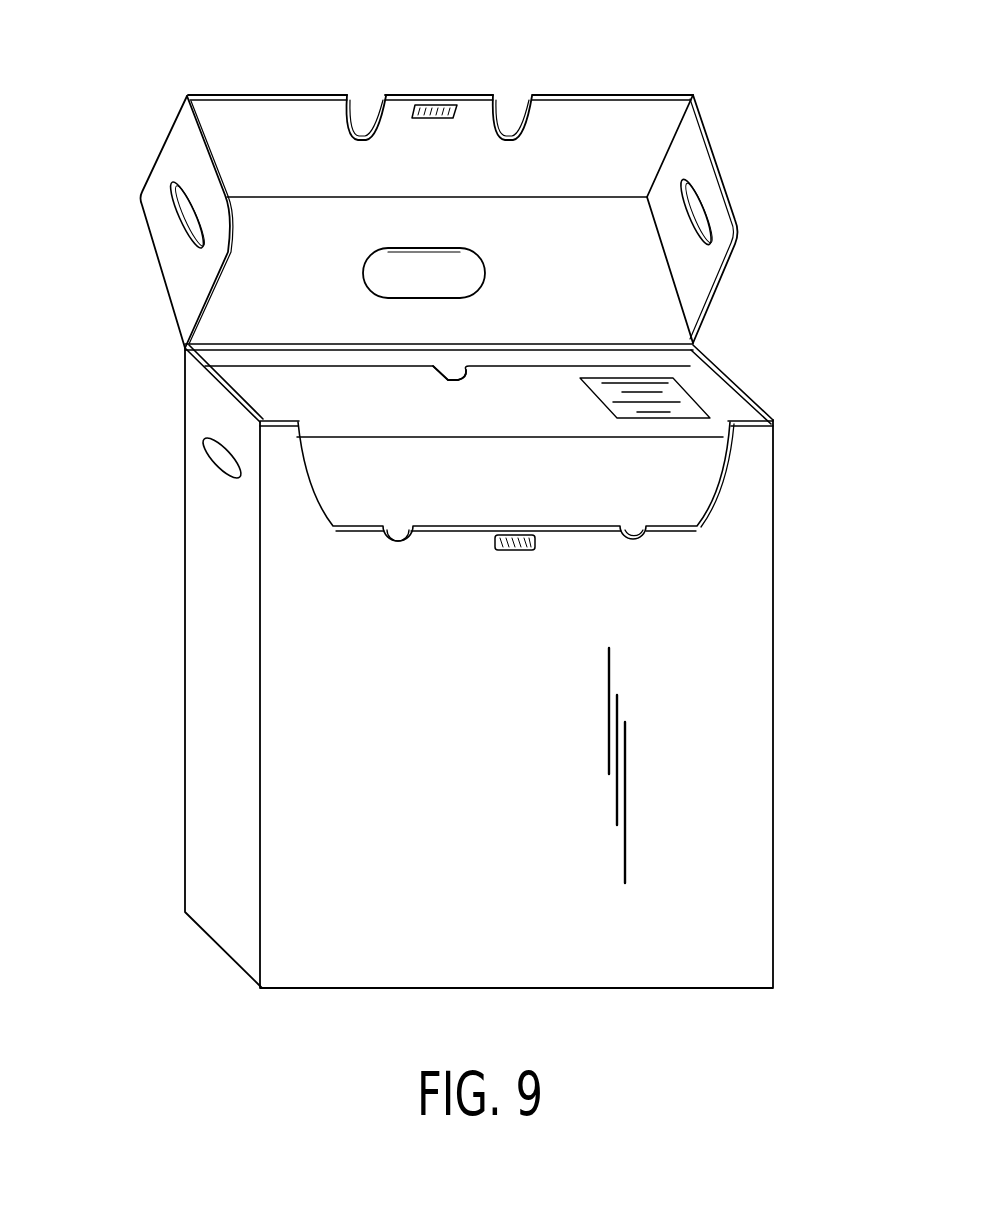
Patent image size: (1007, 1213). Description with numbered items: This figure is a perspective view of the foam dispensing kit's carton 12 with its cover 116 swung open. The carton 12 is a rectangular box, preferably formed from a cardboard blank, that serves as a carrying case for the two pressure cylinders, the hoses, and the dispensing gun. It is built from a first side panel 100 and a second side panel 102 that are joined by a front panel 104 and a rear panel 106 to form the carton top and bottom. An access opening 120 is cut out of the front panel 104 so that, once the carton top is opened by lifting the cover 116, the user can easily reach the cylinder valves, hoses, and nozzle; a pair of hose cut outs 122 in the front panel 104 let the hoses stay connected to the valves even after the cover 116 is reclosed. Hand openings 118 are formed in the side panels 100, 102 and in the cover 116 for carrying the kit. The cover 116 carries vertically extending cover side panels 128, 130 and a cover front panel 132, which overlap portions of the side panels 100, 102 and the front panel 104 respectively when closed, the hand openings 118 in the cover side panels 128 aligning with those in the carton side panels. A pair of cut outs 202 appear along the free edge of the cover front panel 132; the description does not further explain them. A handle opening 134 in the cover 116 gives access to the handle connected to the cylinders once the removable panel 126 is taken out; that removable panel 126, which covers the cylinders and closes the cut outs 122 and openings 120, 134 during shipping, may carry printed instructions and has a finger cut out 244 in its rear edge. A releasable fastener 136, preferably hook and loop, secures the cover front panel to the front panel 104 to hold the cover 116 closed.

The carton 12 is at (776, 600).
The first side panel 100 is at (215, 750).
The second side panel 102 is at (727, 385).
The front panel 104 is at (540, 860).
The rear panel 106 is at (242, 356).
The cover 116 is at (696, 94).
The hand openings 118 is at (204, 456).
The access opening 120 is at (330, 526).
The hose cut outs 122 is at (400, 546).
The removable panel 126 is at (538, 488).
The cover side panel 128 is at (718, 152).
The cover side panel 130 is at (195, 137).
The cover front panel 132 is at (465, 93).
The handle opening 134 is at (487, 274).
The releasable fastener 136 is at (513, 551).
The notch 202 is at (348, 142).
The finger cut out 244 is at (447, 381).